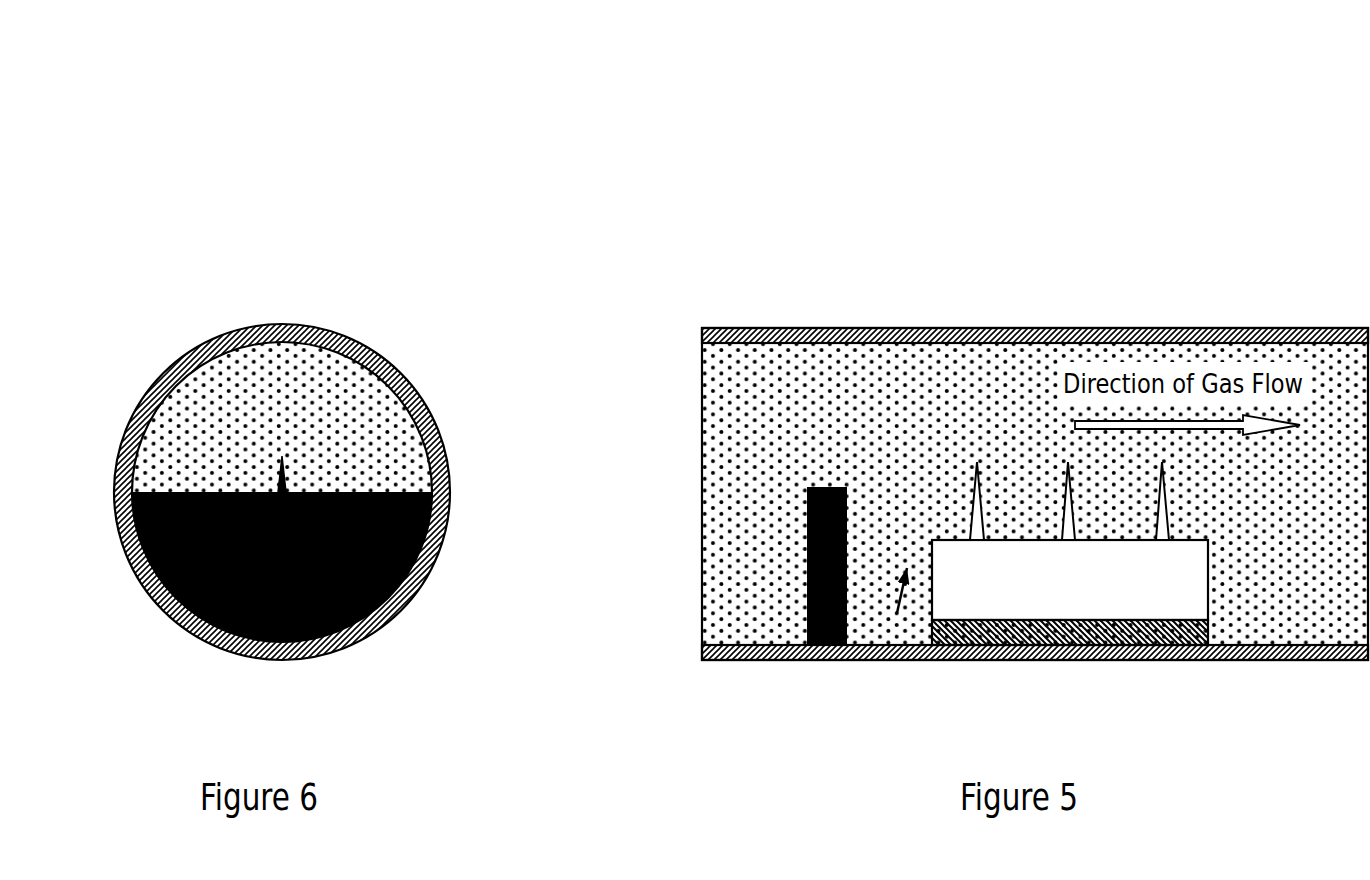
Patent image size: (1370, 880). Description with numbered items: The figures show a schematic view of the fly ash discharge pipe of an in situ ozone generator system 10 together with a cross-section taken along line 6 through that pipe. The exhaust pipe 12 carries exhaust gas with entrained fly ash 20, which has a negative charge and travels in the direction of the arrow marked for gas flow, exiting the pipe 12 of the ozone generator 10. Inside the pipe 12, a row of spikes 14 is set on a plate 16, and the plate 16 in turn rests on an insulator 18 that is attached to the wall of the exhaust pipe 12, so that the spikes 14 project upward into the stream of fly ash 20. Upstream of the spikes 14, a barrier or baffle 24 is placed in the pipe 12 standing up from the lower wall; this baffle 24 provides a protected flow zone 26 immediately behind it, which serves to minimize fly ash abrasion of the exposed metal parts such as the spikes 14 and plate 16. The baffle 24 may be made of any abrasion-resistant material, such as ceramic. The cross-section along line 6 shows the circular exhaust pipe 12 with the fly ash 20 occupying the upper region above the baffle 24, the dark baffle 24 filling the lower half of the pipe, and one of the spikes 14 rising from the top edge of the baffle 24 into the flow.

In FIG. 5, the in situ ozone generator system 10 is at (978, 193).
In FIG. 6, the in situ ozone generator system 10 is at (407, 290).
In FIG. 5, the exhaust pipe 12 is at (1197, 322).
In FIG. 6, the exhaust pipe 12 is at (272, 327).
In FIG. 5, the spikes 14 is at (978, 470).
In FIG. 6, the spikes 14 is at (298, 486).
In FIG. 5, the plate 16 is at (1137, 580).
In FIG. 5, the insulator 18 is at (1050, 636).
In FIG. 5, the exhaust gas with entrained fly ash 20 is at (738, 472).
In FIG. 6, the exhaust gas with entrained fly ash 20 is at (233, 428).
In FIG. 5, the barrier or baffle 24 is at (805, 570).
In FIG. 6, the barrier or baffle 24 is at (375, 628).
In FIG. 5, the protected flow zone 26 is at (865, 600).
In FIG. 5, the section line 6- 6 is at (792, 312).